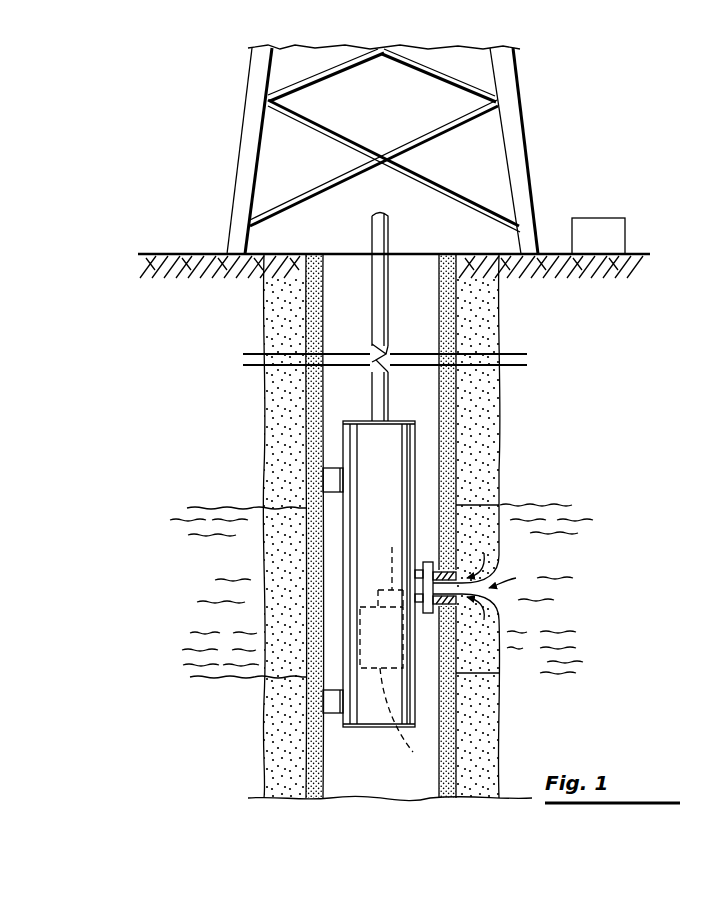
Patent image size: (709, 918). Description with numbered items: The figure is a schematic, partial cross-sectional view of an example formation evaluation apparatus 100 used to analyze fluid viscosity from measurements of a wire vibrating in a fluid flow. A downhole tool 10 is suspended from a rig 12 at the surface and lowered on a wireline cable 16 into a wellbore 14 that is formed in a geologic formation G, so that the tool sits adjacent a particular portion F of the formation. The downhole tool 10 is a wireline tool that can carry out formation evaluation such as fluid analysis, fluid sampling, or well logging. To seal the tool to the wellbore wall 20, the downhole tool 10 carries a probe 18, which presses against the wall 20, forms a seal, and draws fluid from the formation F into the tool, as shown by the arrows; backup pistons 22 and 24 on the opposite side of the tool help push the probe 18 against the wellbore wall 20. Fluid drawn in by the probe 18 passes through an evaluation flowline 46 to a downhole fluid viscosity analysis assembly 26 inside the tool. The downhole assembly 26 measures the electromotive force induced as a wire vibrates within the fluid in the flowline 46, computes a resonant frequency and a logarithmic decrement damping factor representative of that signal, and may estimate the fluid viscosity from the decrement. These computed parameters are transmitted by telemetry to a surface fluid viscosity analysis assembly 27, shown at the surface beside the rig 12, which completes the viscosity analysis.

The formation evaluation apparatus 100 is at (610, 176).
The rig 12 is at (528, 150).
The surface fluid viscosity analysis assembly 27 is at (611, 249).
The wellbore 14 is at (440, 279).
The wireline cable 16 is at (388, 228).
The downhole tool 10 is at (420, 505).
The backup piston 22 is at (332, 467).
The backup piston 24 is at (331, 714).
The probe 18 is at (440, 572).
The evaluation flowline 46 is at (378, 592).
The downhole fluid viscosity analysis assembly 26 is at (408, 717).
The wellbore wall 20 is at (460, 650).
The portion of the geologic formation F is at (196, 656).
The geologic formation G is at (580, 418).